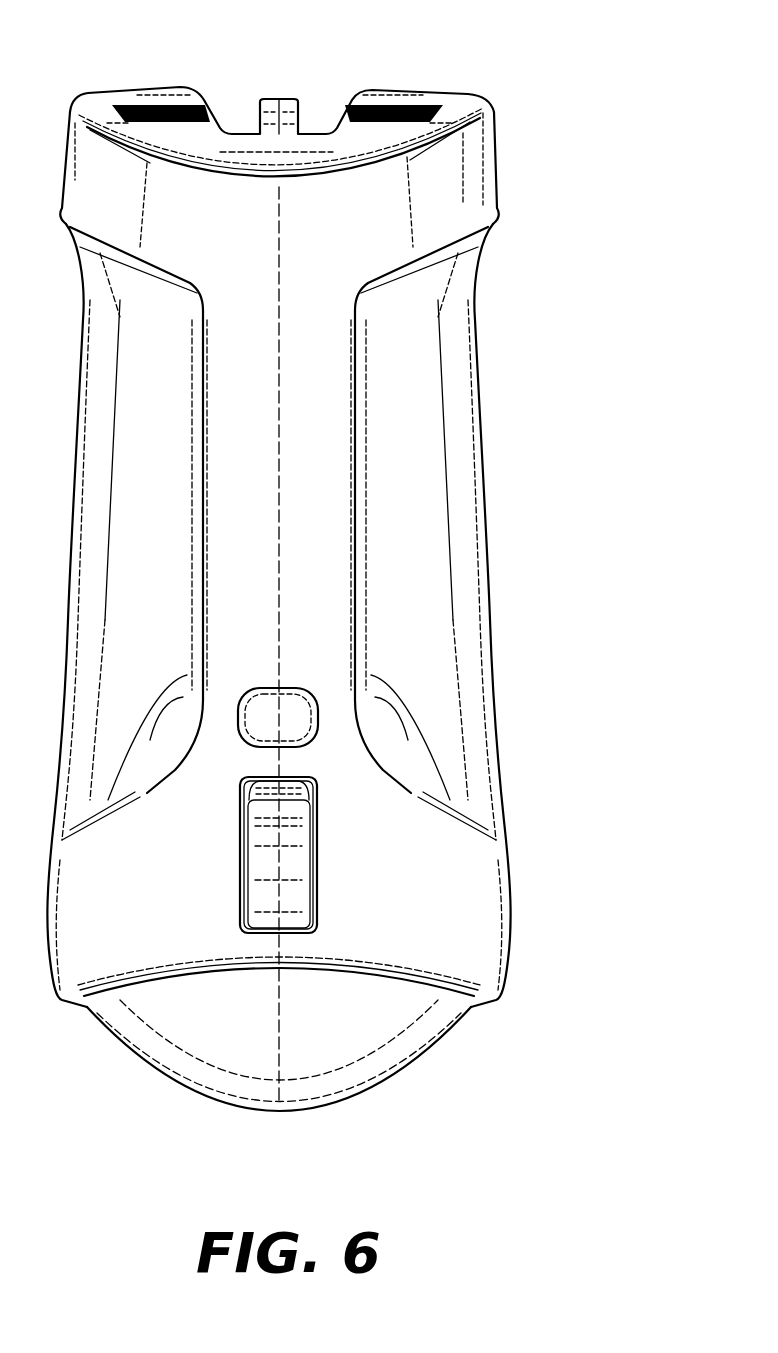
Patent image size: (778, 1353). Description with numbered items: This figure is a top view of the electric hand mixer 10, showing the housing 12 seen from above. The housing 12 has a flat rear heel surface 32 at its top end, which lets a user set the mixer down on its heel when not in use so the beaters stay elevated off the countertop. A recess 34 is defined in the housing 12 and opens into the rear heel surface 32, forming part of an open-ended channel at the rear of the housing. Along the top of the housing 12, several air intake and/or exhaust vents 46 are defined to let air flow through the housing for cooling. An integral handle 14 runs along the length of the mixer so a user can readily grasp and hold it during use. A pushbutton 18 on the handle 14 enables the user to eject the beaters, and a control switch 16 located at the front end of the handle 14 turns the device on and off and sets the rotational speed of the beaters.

The electric hand mixer 10 is at (594, 42).
The housing 12 is at (467, 580).
The integral handle 14 is at (332, 482).
The control switch 16 is at (290, 862).
The pushbutton 18 is at (295, 703).
The rear heel surface 32 is at (405, 138).
The recess 34 is at (203, 100).
The air intake and/or exhaust vents 46 is at (377, 115).